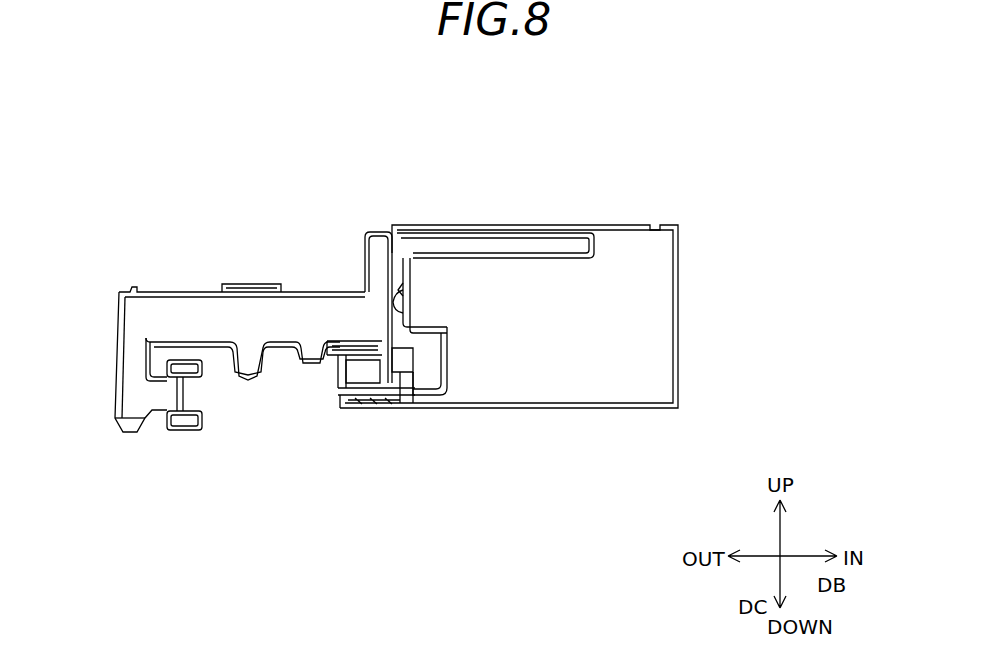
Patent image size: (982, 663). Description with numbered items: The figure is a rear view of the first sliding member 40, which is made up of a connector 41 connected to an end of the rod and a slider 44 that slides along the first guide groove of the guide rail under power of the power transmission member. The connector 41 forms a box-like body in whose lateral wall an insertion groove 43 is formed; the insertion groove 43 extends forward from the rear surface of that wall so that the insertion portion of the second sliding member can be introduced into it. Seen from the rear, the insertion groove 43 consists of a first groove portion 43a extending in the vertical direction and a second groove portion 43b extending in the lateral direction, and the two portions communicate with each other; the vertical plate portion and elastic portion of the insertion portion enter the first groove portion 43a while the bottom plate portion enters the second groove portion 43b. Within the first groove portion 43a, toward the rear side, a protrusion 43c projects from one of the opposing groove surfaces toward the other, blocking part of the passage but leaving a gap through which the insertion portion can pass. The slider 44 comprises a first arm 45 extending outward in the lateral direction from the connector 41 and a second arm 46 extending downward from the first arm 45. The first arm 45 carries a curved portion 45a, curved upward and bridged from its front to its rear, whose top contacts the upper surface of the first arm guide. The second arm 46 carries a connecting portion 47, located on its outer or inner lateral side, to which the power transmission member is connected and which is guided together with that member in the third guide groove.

The first sliding member 40 is at (486, 121).
The connector 41 is at (627, 180).
The insertion groove 43 is at (410, 358).
The first groove portion 43a is at (412, 312).
The second groove portion 43b is at (369, 405).
The protrusion 43c is at (415, 287).
The slider 44 is at (154, 282).
The first arm 45 is at (192, 307).
The curved portion 45a is at (256, 284).
The second arm 46 is at (135, 354).
The connecting portion 47 is at (168, 394).